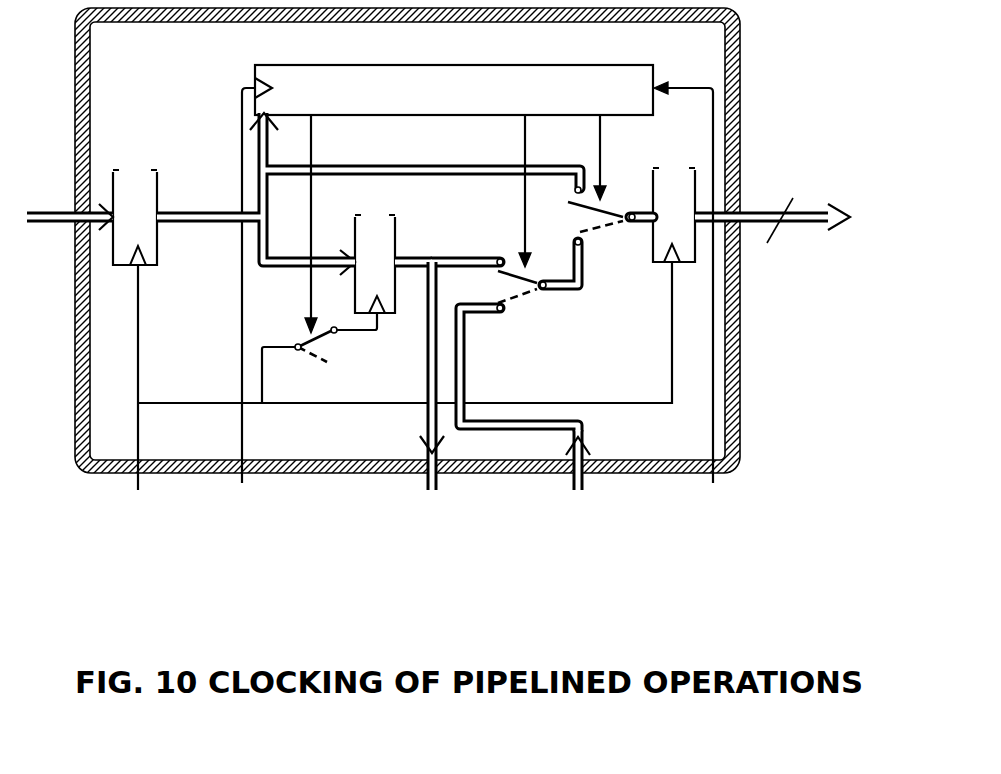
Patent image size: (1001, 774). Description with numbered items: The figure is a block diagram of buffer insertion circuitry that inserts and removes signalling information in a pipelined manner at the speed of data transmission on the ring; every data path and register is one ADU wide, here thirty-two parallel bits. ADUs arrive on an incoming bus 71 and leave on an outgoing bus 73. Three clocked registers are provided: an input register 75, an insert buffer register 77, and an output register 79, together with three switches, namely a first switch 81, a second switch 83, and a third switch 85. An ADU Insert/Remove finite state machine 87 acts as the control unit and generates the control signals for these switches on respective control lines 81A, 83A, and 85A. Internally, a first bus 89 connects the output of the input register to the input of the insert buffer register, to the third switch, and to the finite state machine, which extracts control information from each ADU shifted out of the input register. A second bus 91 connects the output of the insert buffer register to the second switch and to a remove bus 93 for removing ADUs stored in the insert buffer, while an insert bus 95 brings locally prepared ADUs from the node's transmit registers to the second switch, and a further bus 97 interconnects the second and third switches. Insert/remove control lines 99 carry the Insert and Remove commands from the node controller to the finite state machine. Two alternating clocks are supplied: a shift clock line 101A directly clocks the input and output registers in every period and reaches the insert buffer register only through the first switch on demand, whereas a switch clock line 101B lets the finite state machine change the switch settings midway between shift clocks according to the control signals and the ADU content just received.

The incoming bus 71 is at (60, 211).
The outgoing bus 73 is at (797, 236).
The input register R1 75 is at (156, 268).
The insert buffer register R2 77 is at (397, 215).
The output register R3 79 is at (683, 264).
The switch S1 81 is at (292, 339).
The control line for switch S1 81A is at (312, 140).
The switch S2 83 is at (542, 338).
The control line for switch S2 83A is at (527, 138).
The switch S3 85 is at (610, 275).
The control line for switch S3 85A is at (603, 138).
The ADU Insert/Remove FSM 87 is at (510, 63).
The bus connecting R1 output 89 is at (219, 212).
The bus connecting R2 output 91 is at (432, 263).
The remove bus 93 is at (440, 484).
The insert bus 95 is at (465, 366).
The bus interconnecting S2 and S3 97 is at (578, 291).
The insert/remove control lines 99 is at (705, 85).
The shift clock line 101A is at (141, 430).
The switch clock line 101B is at (244, 430).